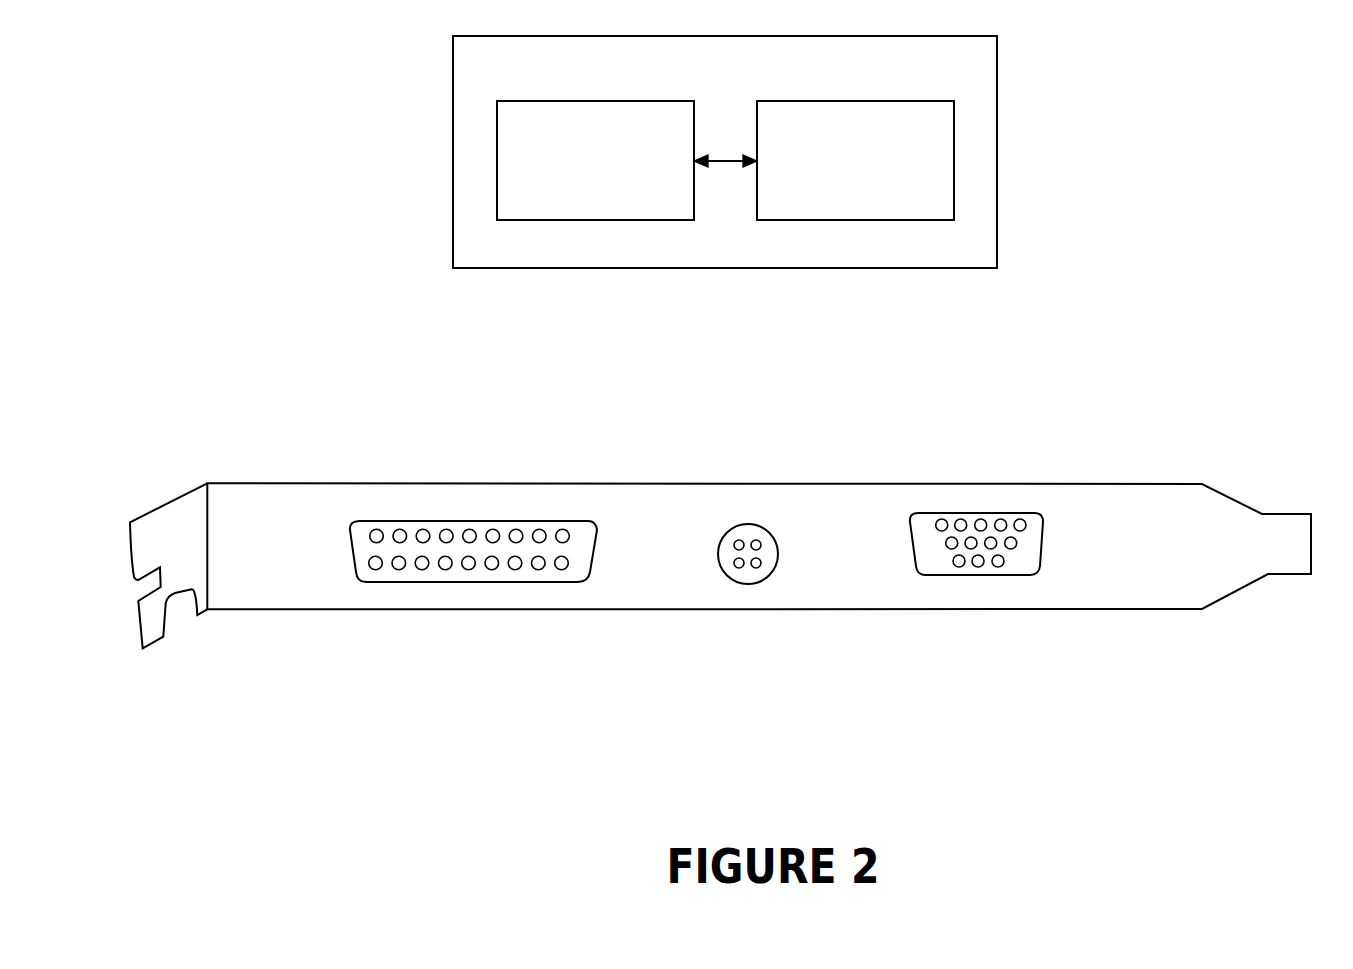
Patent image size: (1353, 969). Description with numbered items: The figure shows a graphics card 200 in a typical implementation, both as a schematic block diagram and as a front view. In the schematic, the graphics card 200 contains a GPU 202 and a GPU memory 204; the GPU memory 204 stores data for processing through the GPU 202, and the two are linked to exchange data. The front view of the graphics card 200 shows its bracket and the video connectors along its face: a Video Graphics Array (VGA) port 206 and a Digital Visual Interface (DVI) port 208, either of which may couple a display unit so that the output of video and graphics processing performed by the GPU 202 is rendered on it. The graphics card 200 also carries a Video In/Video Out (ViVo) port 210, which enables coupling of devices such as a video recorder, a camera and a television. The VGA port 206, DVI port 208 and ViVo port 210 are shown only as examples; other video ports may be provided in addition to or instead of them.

The graphics card 200 is at (1112, 484).
The GPU 202 is at (578, 181).
The GPU memory 204 is at (871, 181).
The Video Graphics Array (VGA) port 206 is at (346, 558).
The Digital Visual Interface (DVI) port 208 is at (968, 567).
The Video In/Video Out (ViVo) port 210 is at (751, 535).